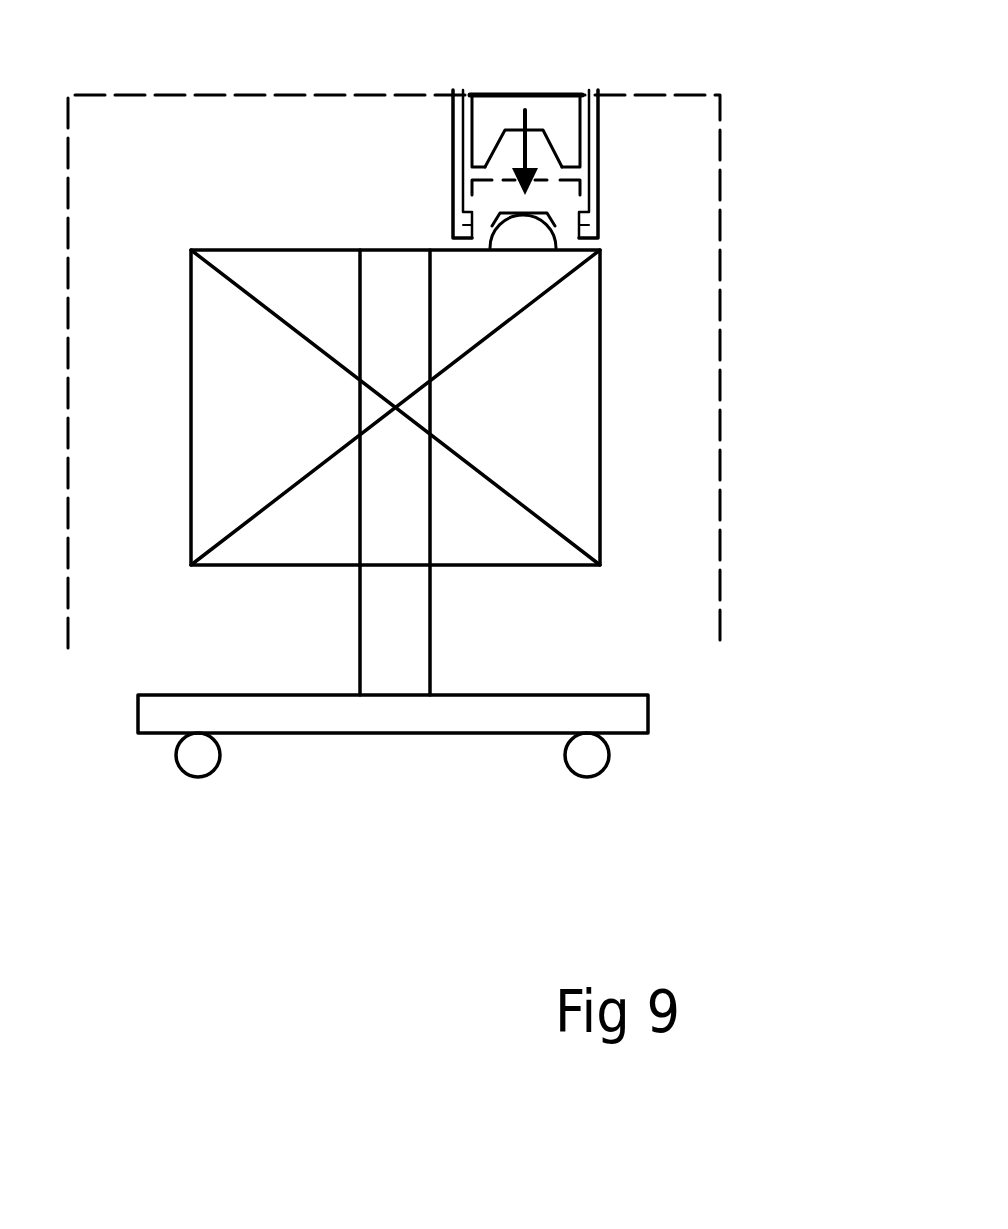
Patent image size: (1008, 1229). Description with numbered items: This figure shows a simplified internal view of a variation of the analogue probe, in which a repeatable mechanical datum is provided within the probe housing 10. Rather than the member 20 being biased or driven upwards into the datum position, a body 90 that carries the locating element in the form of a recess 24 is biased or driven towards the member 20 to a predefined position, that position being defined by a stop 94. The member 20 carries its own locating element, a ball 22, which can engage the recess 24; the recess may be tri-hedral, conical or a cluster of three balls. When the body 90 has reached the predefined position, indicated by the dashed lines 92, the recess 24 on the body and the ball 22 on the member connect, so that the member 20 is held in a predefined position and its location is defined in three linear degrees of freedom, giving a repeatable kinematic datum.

The probe housing 10 is at (722, 360).
The rod 20 is at (383, 288).
The ball 22 is at (535, 238).
The recess 24 is at (488, 153).
The body 90 is at (552, 110).
The dashed lines 92 is at (452, 212).
The stop 94 is at (598, 236).